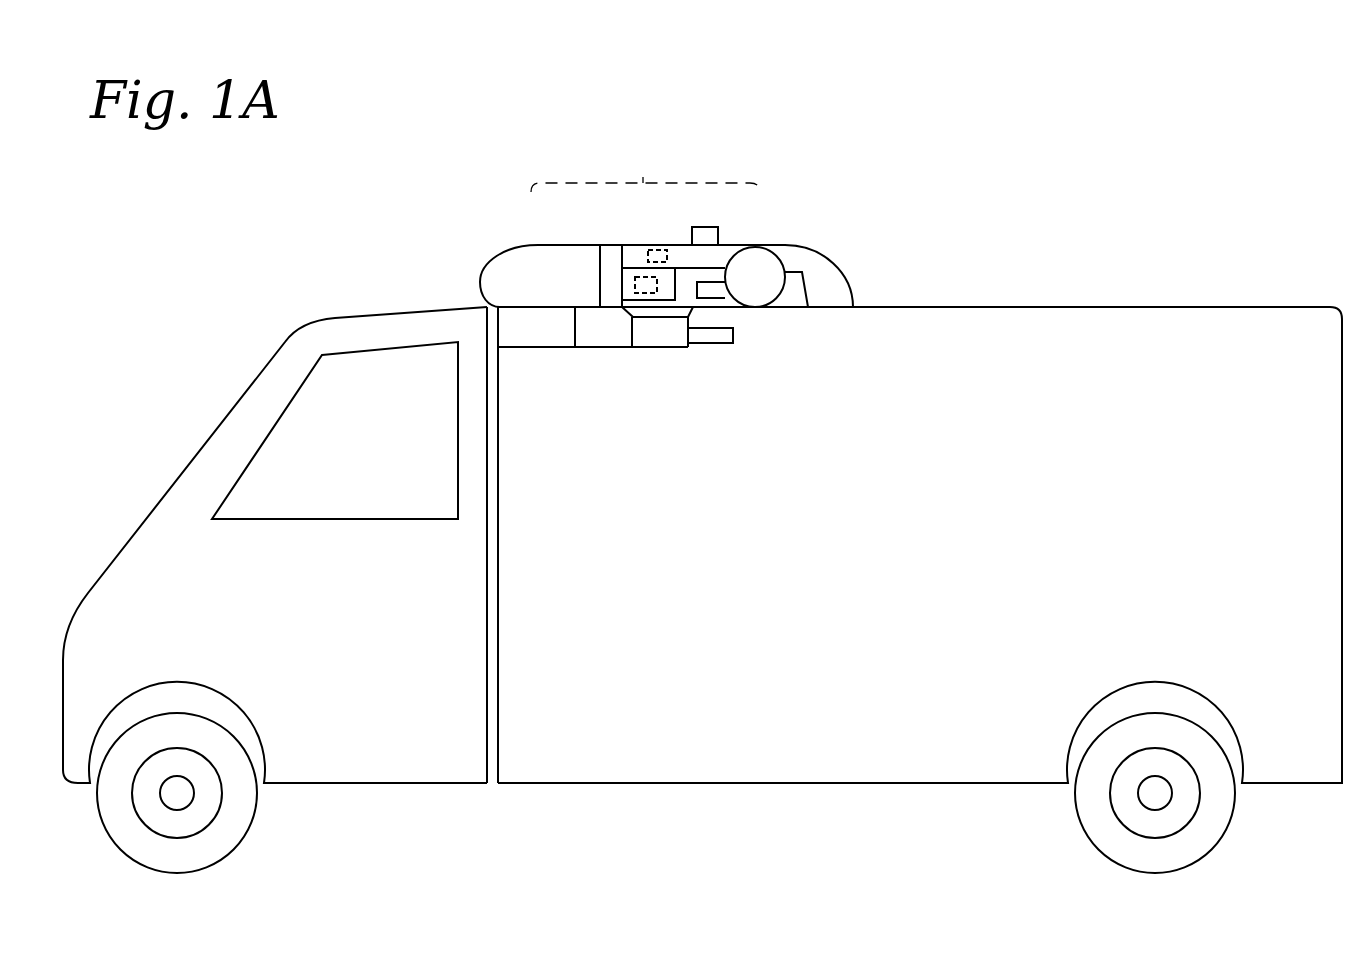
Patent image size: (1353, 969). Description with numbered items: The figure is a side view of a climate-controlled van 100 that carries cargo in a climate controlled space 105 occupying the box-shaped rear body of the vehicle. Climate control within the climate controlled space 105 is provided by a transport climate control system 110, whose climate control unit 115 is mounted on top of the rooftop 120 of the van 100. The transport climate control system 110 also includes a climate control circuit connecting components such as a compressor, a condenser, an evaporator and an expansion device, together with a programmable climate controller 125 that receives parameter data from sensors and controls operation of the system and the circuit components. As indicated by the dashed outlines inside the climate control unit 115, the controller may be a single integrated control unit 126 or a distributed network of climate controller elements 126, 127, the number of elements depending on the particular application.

The climate-controlled van 100 is at (248, 296).
The climate controlled space 105 is at (1207, 342).
The transport climate control system 110 is at (805, 198).
The climate control unit 115 is at (827, 257).
The rooftop 120 is at (1020, 305).
The programmable climate controller 125 is at (643, 178).
The integrated control unit 126 is at (642, 274).
The climate controller element 127 is at (660, 248).